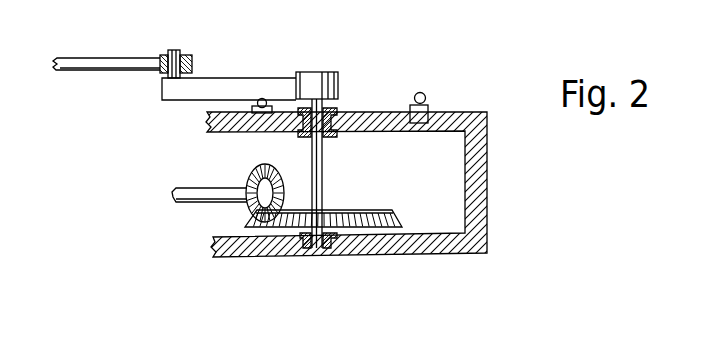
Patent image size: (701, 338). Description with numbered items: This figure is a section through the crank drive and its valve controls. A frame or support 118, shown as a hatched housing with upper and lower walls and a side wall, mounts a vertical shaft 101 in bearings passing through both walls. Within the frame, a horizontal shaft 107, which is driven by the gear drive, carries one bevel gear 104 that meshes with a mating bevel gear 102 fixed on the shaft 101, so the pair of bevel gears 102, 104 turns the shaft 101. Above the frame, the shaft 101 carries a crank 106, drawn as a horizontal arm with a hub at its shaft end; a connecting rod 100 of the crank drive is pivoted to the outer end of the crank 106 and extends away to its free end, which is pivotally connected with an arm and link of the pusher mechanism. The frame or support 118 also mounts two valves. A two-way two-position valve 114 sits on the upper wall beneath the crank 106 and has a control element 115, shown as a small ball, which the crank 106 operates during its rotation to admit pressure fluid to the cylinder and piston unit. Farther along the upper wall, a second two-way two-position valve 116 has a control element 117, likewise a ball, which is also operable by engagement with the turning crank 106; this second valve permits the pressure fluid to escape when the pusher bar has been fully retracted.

The connecting rod 100 is at (84, 62).
The shaft 101 is at (323, 170).
The bevel gear 102 is at (358, 208).
The bevel gear 104 is at (265, 165).
The crank 106 is at (222, 80).
The shaft 107 is at (195, 188).
The two-way two-position valve 114 is at (250, 108).
The control element 115 is at (264, 97).
The second two-way two-position valve 116 is at (428, 108).
The control element 117 is at (420, 92).
The frame or support 118 is at (487, 178).